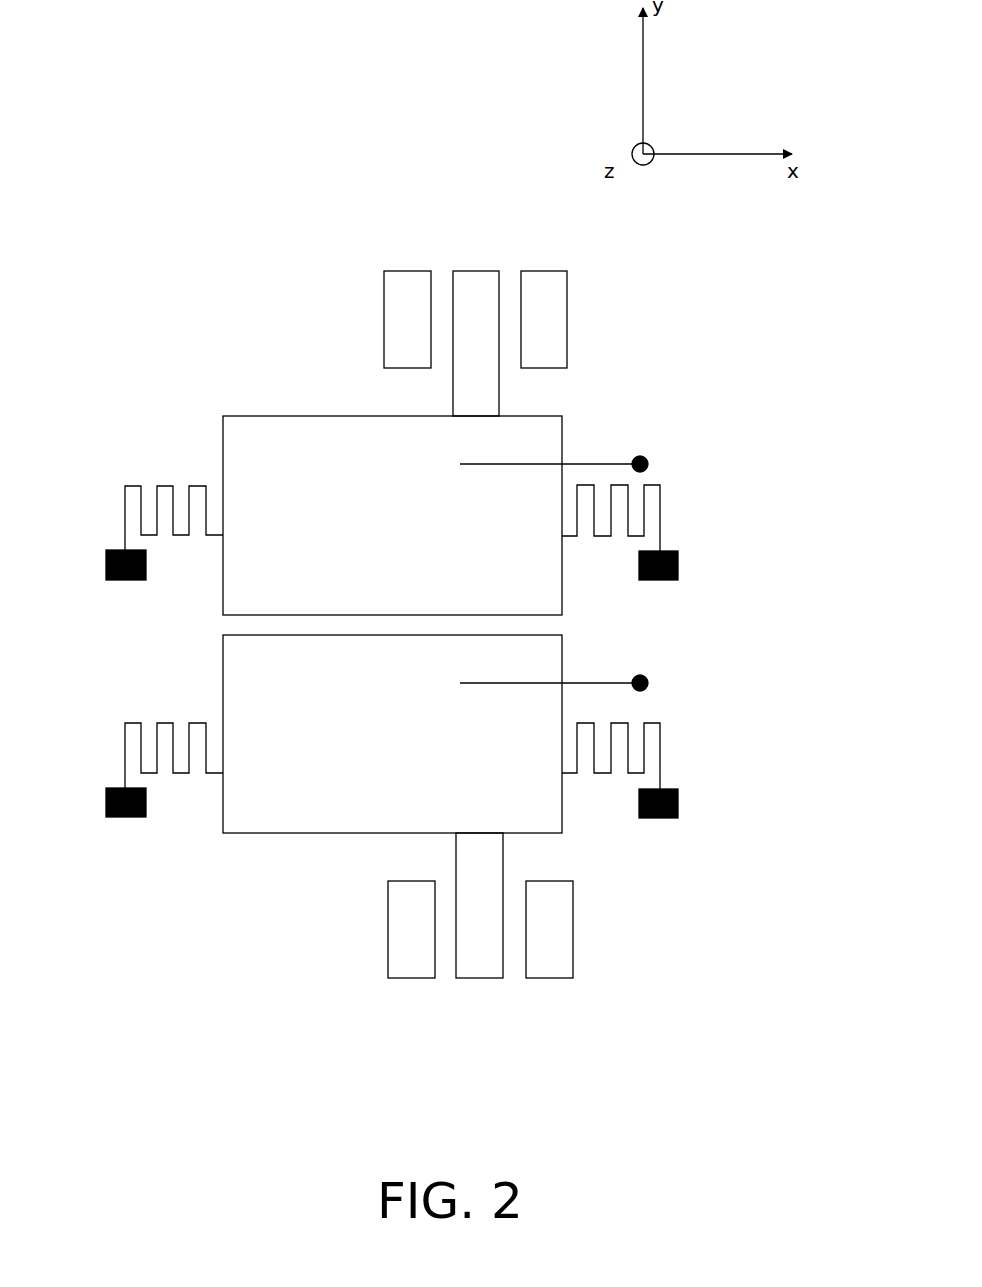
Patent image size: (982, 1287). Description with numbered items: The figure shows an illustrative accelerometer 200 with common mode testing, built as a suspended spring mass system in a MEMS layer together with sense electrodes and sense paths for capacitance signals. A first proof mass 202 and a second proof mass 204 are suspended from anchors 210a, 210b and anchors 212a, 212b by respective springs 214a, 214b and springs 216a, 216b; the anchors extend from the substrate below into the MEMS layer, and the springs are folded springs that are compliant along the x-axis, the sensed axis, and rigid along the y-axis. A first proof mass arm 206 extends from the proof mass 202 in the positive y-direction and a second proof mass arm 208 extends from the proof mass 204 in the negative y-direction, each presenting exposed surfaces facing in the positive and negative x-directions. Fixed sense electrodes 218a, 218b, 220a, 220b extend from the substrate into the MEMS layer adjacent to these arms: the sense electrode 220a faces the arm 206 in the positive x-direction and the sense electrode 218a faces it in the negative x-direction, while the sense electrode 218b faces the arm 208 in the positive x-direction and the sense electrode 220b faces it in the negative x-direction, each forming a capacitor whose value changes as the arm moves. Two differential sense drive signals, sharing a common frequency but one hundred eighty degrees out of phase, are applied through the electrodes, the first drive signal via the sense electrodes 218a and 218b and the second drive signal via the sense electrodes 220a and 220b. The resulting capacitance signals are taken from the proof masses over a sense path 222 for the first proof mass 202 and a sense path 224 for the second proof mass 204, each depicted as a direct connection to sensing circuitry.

The accelerometer 200 is at (140, 271).
The proof mass 202 is at (223, 474).
The proof mass 204 is at (223, 690).
The first proof mass arm 206 is at (474, 268).
The second proof mass arm 208 is at (480, 980).
The anchor 210a is at (106, 563).
The anchor 210b is at (678, 564).
The anchor 212a is at (106, 802).
The anchor 212b is at (678, 804).
The spring 214a is at (186, 552).
The spring 214b is at (601, 552).
The spring 216a is at (188, 789).
The spring 216b is at (600, 790).
The sense electrode 218a is at (567, 300).
The sense electrode 218b is at (388, 946).
The sense electrode 220a is at (384, 320).
The sense electrode 220b is at (573, 940).
The sense path 222 is at (583, 464).
The sense path 224 is at (575, 683).